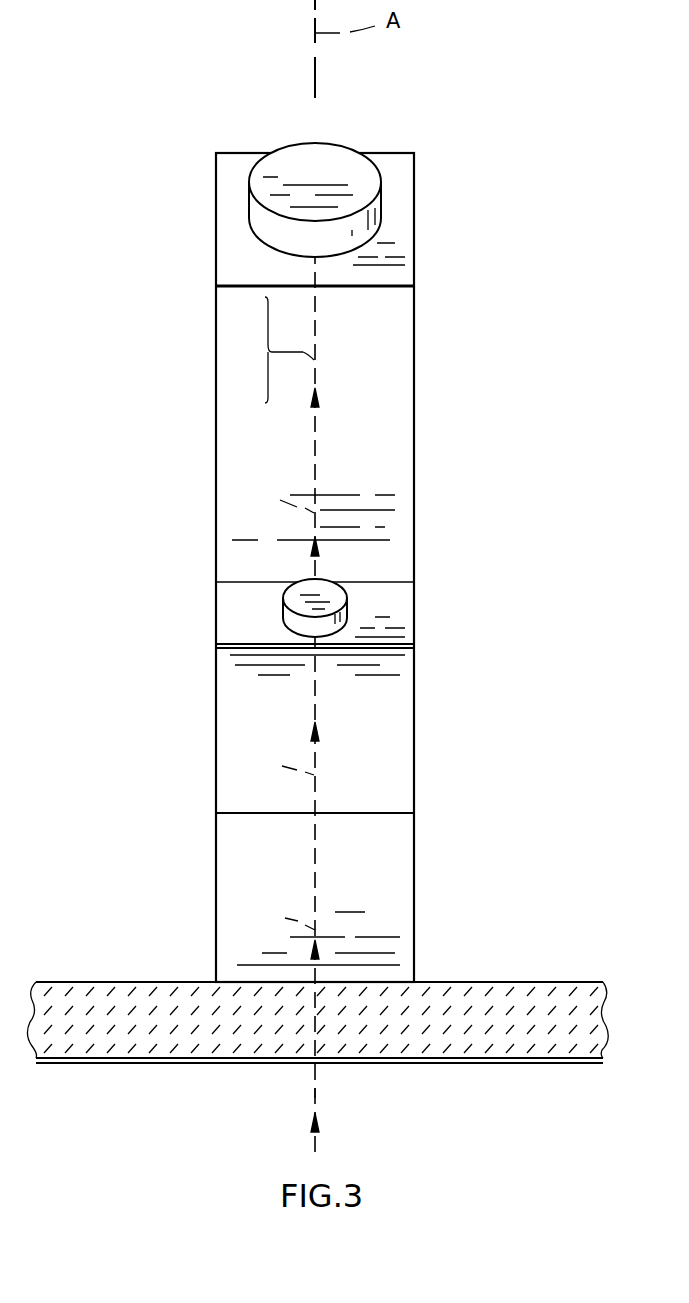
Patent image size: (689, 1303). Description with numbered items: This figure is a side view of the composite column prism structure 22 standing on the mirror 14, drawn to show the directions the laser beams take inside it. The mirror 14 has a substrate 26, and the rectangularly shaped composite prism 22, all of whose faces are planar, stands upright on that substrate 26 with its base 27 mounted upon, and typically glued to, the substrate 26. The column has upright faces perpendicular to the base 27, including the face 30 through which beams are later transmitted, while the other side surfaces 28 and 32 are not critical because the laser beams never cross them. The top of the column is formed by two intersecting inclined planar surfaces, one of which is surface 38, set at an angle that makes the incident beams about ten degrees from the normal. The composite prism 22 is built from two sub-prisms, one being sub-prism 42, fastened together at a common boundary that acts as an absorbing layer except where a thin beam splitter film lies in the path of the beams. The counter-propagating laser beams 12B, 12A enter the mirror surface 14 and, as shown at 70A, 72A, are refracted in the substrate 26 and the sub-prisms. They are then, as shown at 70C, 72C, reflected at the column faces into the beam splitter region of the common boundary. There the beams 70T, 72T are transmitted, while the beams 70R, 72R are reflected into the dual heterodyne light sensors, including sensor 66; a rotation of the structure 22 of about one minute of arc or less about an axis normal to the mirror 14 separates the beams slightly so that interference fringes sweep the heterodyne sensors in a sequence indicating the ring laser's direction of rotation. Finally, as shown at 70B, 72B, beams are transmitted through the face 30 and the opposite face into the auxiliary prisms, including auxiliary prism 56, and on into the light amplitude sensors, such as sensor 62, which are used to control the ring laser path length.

The counter-propagating laser beam 12A is at (315, 1093).
The counter-propagating laser beam 12B is at (387, 1094).
The mirror 14 is at (492, 1060).
The composite column prism 22 is at (500, 553).
The substrate 26 is at (510, 995).
The base 27 is at (360, 980).
The side surface 28 is at (216, 455).
The face 30 is at (385, 520).
The side surface 32 is at (417, 675).
The inclined planar top surface 38 is at (398, 237).
The sub-prism 42 is at (405, 352).
The auxiliary prism 56 is at (248, 703).
The light amplitude sensor 62 is at (333, 590).
The dual heterodyne light sensor 66 is at (343, 168).
The refracted beam 70A is at (274, 917).
The refracted beam 72A is at (254, 940).
The transmitted beam 70B is at (273, 763).
The transmitted beam 72B is at (253, 787).
The reflected beam 70C is at (273, 500).
The reflected beam 72C is at (253, 523).
The transmitted beam 70T is at (270, 350).
The reflected beam 72R is at (250, 341).
The reflected beam 70R is at (250, 366).
The transmitted beam 72T is at (246, 391).